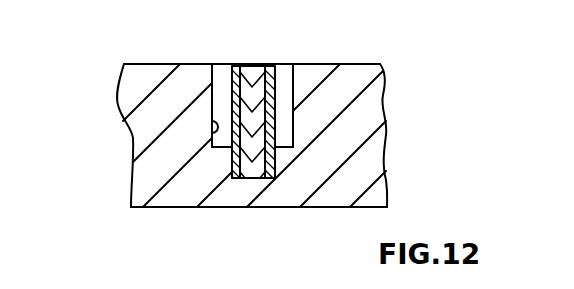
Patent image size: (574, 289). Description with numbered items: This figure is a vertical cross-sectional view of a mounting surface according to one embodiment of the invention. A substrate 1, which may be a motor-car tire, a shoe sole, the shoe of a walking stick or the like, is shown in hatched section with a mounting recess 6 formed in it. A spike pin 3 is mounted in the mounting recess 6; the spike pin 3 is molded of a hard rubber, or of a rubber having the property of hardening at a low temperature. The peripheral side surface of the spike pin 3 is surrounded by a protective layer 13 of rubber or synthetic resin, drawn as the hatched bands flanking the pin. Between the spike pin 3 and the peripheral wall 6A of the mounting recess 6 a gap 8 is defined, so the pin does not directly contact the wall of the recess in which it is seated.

The substrate 1 is at (366, 101).
The spike pin 3 is at (250, 67).
The mounting recess 6 is at (218, 150).
The peripheral wall 6A is at (212, 131).
The gap 8 is at (225, 68).
The protective layer 13 is at (297, 74).